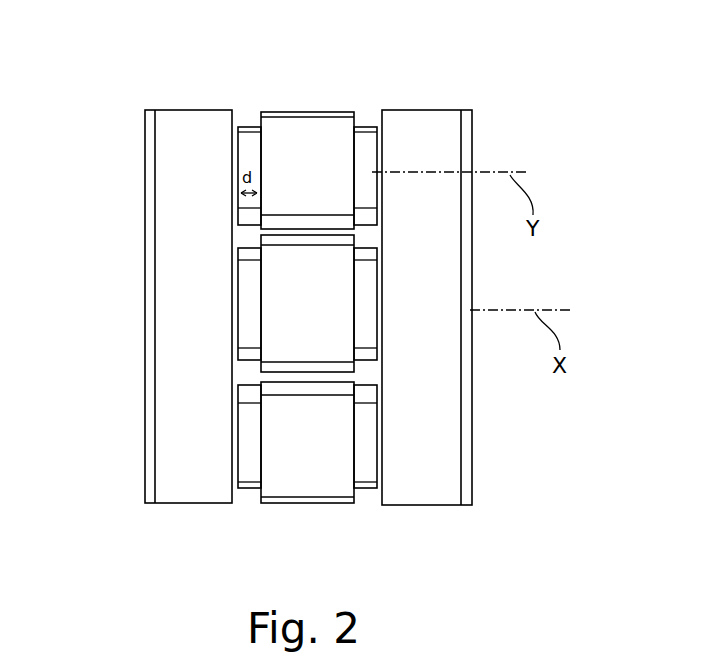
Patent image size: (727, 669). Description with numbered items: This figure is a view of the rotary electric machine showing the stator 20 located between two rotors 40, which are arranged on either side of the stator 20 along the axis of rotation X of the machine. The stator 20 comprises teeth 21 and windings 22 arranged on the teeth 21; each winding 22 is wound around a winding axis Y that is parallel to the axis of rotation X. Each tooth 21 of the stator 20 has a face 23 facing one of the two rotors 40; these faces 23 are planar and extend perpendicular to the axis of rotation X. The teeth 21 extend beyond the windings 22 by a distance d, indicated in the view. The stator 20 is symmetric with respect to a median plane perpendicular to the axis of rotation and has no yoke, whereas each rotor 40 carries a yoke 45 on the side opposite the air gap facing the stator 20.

The stator 20 is at (304, 314).
The teeth 21 is at (247, 138).
The windings 22 is at (303, 127).
The face 23 is at (378, 140).
The rotors 40 is at (177, 258).
The yoke 45 is at (147, 370).